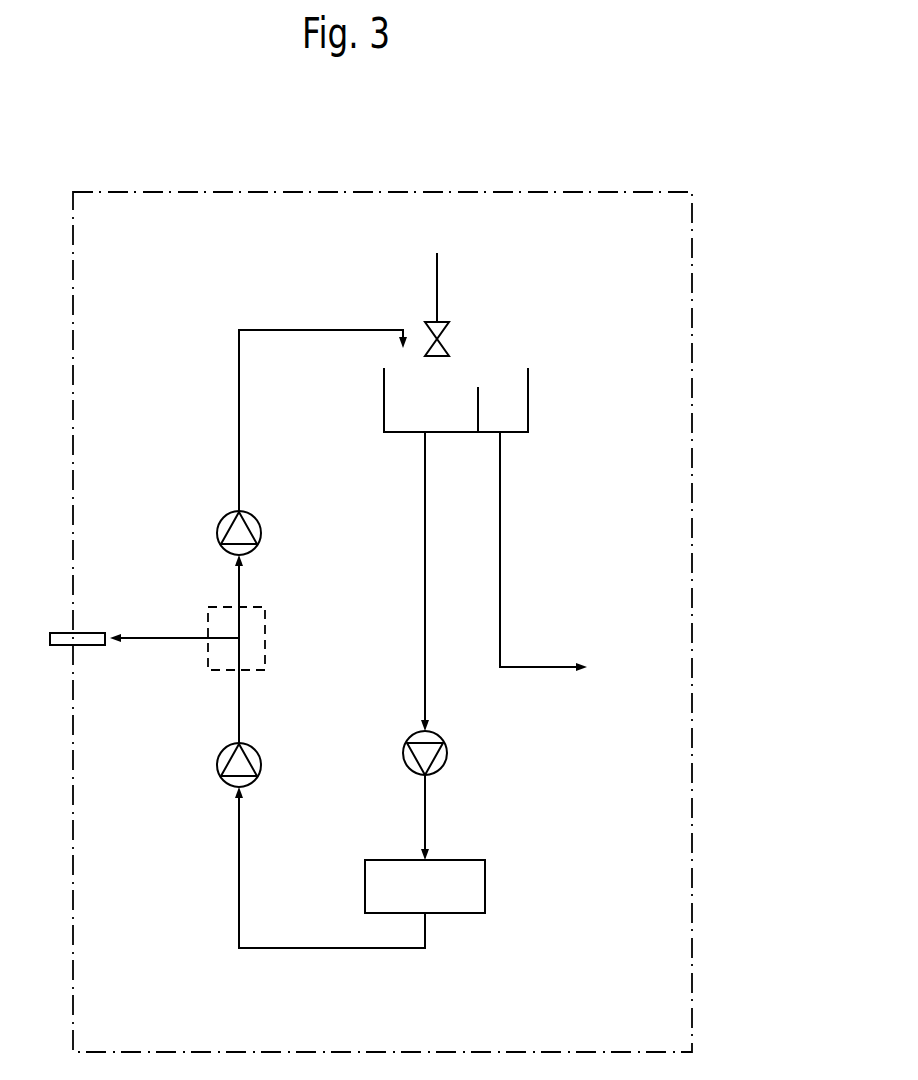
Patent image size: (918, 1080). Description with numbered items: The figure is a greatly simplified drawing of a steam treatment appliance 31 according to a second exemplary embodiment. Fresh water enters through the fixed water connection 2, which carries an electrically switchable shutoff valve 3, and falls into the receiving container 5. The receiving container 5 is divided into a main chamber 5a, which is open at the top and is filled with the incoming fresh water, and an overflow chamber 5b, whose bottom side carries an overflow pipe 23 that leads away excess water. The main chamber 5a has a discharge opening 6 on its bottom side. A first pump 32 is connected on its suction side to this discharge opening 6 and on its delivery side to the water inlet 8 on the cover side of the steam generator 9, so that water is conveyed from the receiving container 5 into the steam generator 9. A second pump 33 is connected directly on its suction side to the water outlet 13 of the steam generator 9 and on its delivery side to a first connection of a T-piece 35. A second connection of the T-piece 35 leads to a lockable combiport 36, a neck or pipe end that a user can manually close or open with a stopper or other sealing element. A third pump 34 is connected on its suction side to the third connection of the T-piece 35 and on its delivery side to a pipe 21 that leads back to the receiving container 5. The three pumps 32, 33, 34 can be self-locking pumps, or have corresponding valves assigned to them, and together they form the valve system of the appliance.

The fixed water connection 2 is at (437, 272).
The shutoff valve 3 is at (449, 330).
The receiving container 5 is at (528, 338).
The main chamber 5a is at (384, 400).
The overflow chamber 5b is at (528, 400).
The discharge opening 6 is at (408, 453).
The water inlet 8 is at (408, 843).
The steam generator 9 is at (486, 890).
The water outlet 13 is at (439, 922).
The pipe 21 is at (238, 366).
The overflow pipe 23 is at (503, 548).
The steam treatment appliance 31 is at (508, 190).
The first pump 32 is at (448, 757).
The second pump 33 is at (218, 765).
The third pump 34 is at (218, 532).
The T-piece 35 is at (267, 622).
The combiport 36 is at (88, 648).